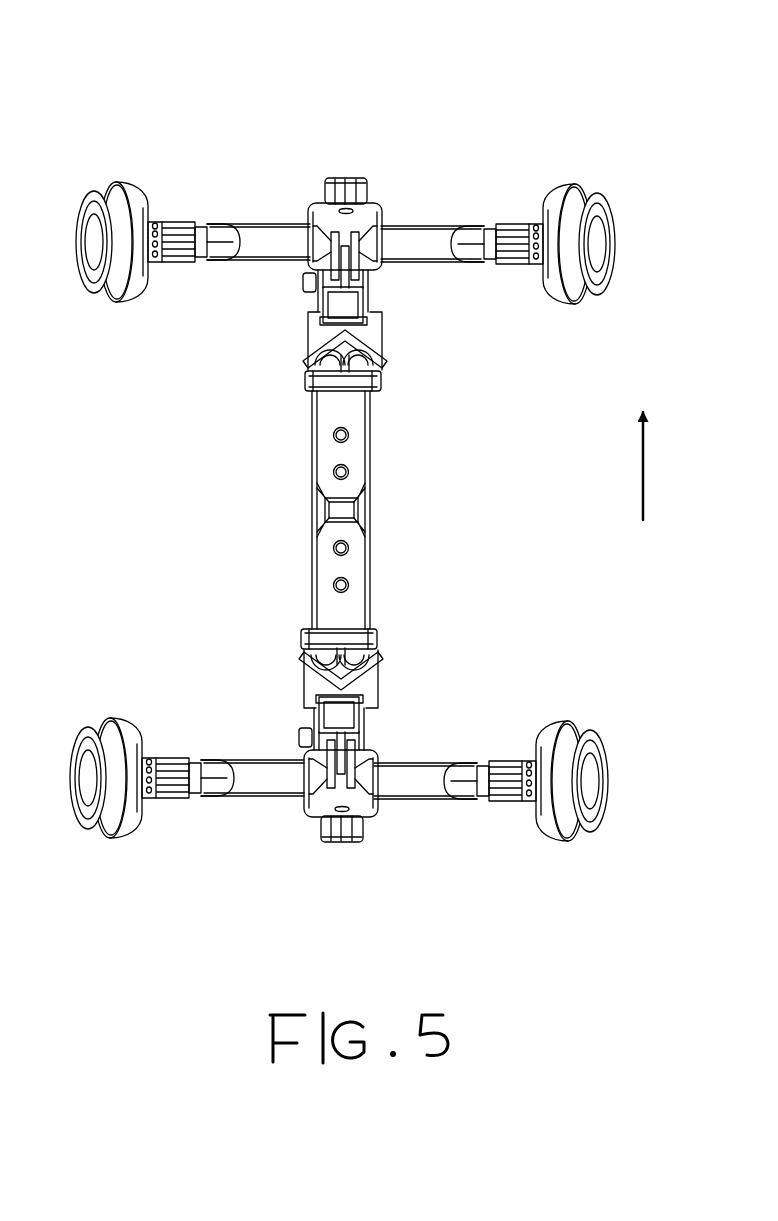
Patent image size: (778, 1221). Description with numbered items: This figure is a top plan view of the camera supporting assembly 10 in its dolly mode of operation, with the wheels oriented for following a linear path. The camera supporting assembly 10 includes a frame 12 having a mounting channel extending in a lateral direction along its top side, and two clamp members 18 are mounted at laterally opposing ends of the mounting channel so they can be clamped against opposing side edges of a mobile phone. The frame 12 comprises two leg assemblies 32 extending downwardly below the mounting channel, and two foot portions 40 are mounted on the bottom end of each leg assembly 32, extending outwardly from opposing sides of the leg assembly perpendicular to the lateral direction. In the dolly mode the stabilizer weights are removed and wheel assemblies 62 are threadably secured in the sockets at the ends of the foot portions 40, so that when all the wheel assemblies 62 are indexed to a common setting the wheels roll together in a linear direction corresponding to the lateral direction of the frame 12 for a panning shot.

The camera supporting assembly 10 is at (72, 86).
The frame 12 is at (376, 511).
The clamp members 18 is at (406, 401).
The leg assemblies 32 is at (397, 310).
The foot portions 40 is at (246, 240).
The wheel assemblies 62 is at (171, 196).